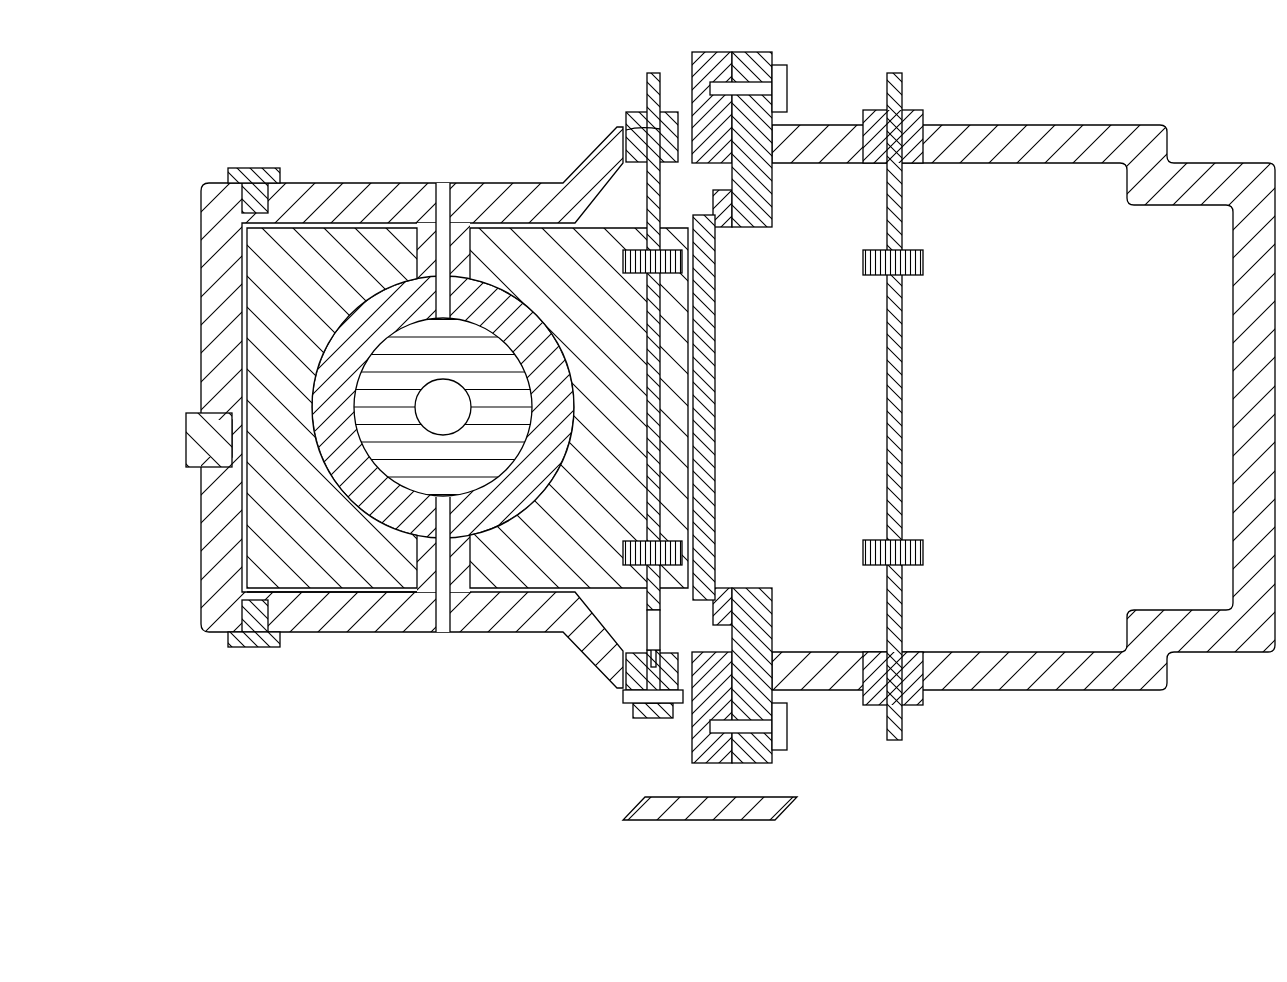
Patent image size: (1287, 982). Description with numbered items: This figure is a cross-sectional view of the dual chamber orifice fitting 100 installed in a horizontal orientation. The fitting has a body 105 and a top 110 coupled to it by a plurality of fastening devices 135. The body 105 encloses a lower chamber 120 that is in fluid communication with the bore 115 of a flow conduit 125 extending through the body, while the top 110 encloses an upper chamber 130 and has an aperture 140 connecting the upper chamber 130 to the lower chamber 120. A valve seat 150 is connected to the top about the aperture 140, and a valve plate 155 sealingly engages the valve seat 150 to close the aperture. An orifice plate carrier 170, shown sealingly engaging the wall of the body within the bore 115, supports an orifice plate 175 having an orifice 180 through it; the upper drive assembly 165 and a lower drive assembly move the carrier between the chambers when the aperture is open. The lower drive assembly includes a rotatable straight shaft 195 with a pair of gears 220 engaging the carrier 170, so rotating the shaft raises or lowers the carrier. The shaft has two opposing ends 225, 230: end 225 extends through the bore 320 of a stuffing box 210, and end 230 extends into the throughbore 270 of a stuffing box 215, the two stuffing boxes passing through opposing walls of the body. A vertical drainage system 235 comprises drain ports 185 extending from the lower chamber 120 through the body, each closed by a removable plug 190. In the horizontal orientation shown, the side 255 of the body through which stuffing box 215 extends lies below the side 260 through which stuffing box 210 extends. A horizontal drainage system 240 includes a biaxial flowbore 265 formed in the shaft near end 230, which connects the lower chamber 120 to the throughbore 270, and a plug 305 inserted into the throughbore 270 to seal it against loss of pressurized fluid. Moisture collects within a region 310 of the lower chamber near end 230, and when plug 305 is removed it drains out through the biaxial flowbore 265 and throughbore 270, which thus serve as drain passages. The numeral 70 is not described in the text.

The orifice fitting 100 is at (1200, 88).
The body 105 is at (360, 183).
The top 110 is at (1050, 122).
The bore 115 is at (492, 438).
The lower chamber 120 is at (672, 203).
The flow conduit 125 is at (528, 490).
The upper chamber 130 is at (982, 419).
The fastening devices 135 is at (788, 85).
The aperture 140 is at (746, 250).
The valve seat 150 is at (718, 612).
The valve plate 155 is at (716, 440).
The upper drive assembly 165 is at (912, 93).
The orifice plate carrier 170 is at (278, 265).
The orifice plate 175 is at (400, 386).
The orifice 180 is at (426, 419).
The drain port 185 is at (262, 602).
The plug 190 is at (258, 168).
The shaft 195 is at (661, 385).
The stuffing box 210 is at (625, 127).
The stuffing box 215 is at (627, 705).
The gears 220 is at (684, 262).
The end 225 is at (647, 98).
The end 230 is at (657, 636).
The vertical drainage system 235 is at (205, 652).
The horizontal drainage system 240 is at (665, 754).
The side 255 is at (621, 692).
The side 260 is at (688, 122).
The biaxial flowbore 265 is at (627, 660).
The throughbore 270 is at (668, 650).
The plug 305 is at (664, 720).
The region 310 is at (632, 621).
The bore 320 is at (636, 131).
The ground surface 70 is at (760, 797).